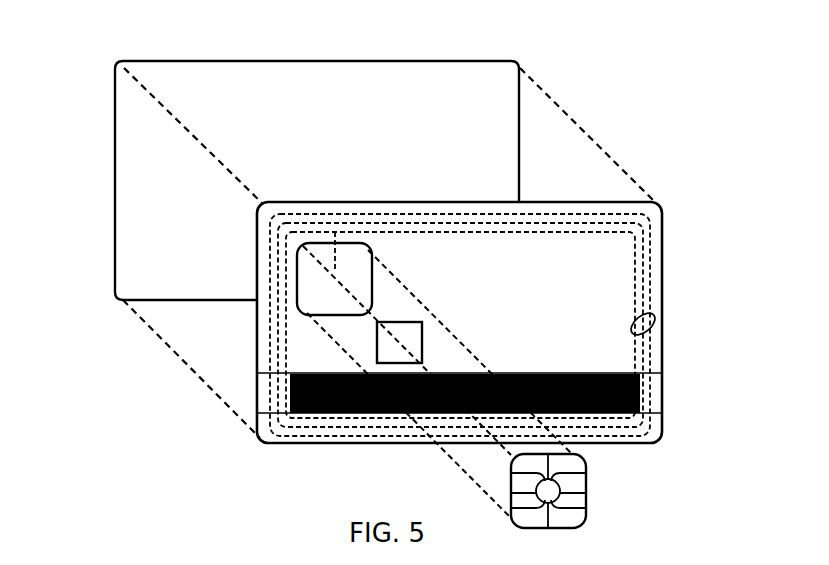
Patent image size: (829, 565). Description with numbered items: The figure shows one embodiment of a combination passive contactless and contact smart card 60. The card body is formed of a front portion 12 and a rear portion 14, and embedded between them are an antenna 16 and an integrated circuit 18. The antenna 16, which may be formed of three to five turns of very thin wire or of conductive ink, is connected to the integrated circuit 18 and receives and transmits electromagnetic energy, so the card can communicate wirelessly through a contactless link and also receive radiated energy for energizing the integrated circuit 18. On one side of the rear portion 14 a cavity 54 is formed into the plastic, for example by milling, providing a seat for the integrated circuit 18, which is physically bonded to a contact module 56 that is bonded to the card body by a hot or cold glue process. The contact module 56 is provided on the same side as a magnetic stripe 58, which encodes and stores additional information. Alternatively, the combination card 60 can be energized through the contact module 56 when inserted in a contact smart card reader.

The front portion 12 is at (175, 60).
The rear portion 14 is at (613, 278).
The antenna 16 is at (649, 316).
The integrated circuit 18 is at (377, 343).
The cavity 54 is at (297, 262).
The contact module 56 is at (587, 483).
The magnetic stripe 58 is at (636, 377).
The combination smart card 60 is at (580, 68).